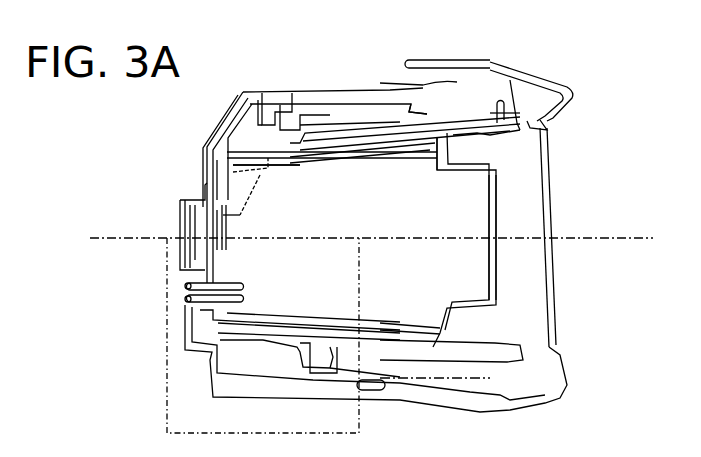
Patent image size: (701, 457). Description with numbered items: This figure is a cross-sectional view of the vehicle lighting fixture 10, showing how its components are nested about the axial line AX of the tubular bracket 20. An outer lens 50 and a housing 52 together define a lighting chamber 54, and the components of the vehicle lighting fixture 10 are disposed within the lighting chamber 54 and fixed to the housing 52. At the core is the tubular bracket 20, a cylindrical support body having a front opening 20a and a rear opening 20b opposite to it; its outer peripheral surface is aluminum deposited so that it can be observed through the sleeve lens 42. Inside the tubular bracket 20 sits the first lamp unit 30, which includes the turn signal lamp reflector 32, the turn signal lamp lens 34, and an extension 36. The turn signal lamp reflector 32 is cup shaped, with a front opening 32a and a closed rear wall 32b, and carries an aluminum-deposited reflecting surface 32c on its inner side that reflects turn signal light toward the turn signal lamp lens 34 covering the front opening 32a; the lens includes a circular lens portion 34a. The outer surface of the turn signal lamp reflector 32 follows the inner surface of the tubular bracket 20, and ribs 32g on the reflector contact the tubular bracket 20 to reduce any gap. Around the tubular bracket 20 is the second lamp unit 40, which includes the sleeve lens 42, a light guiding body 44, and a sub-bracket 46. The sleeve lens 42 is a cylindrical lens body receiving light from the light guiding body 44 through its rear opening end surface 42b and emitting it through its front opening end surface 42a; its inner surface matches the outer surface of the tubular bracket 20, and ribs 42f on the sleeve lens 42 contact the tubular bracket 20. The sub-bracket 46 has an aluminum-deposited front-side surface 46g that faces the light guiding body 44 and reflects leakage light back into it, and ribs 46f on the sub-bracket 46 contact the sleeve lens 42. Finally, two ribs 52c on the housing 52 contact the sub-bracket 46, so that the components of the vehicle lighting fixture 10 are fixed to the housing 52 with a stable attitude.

The vehicle lighting fixture 10 is at (573, 68).
The tubular bracket 20 is at (342, 137).
The front opening 20a is at (488, 117).
The rear opening 20b is at (232, 157).
The first lamp unit 30 is at (503, 202).
The turn signal lamp reflector 32 is at (332, 179).
The front opening 32a is at (440, 157).
The rear wall 32b is at (252, 193).
The reflecting surface 32c is at (345, 157).
The ribs 32g is at (233, 172).
The turn signal lamp lens 34 is at (465, 237).
The lens portion 34a is at (490, 230).
The extension 36 is at (508, 120).
The second lamp unit 40 is at (423, 102).
The sleeve lens 42 is at (315, 120).
The front opening end surface 42a is at (437, 109).
The rear opening end surface 42b is at (285, 117).
The ribs 42f is at (223, 247).
The light guiding body 44 is at (267, 120).
The sub-bracket 46 is at (182, 213).
The ribs 46f is at (217, 228).
The front-side surface 46g is at (260, 123).
The outer lens 50 is at (557, 273).
The housing 52 is at (377, 85).
The ribs 52c is at (217, 177).
The lighting chamber 54 is at (530, 293).
The axial line AX is at (632, 238).